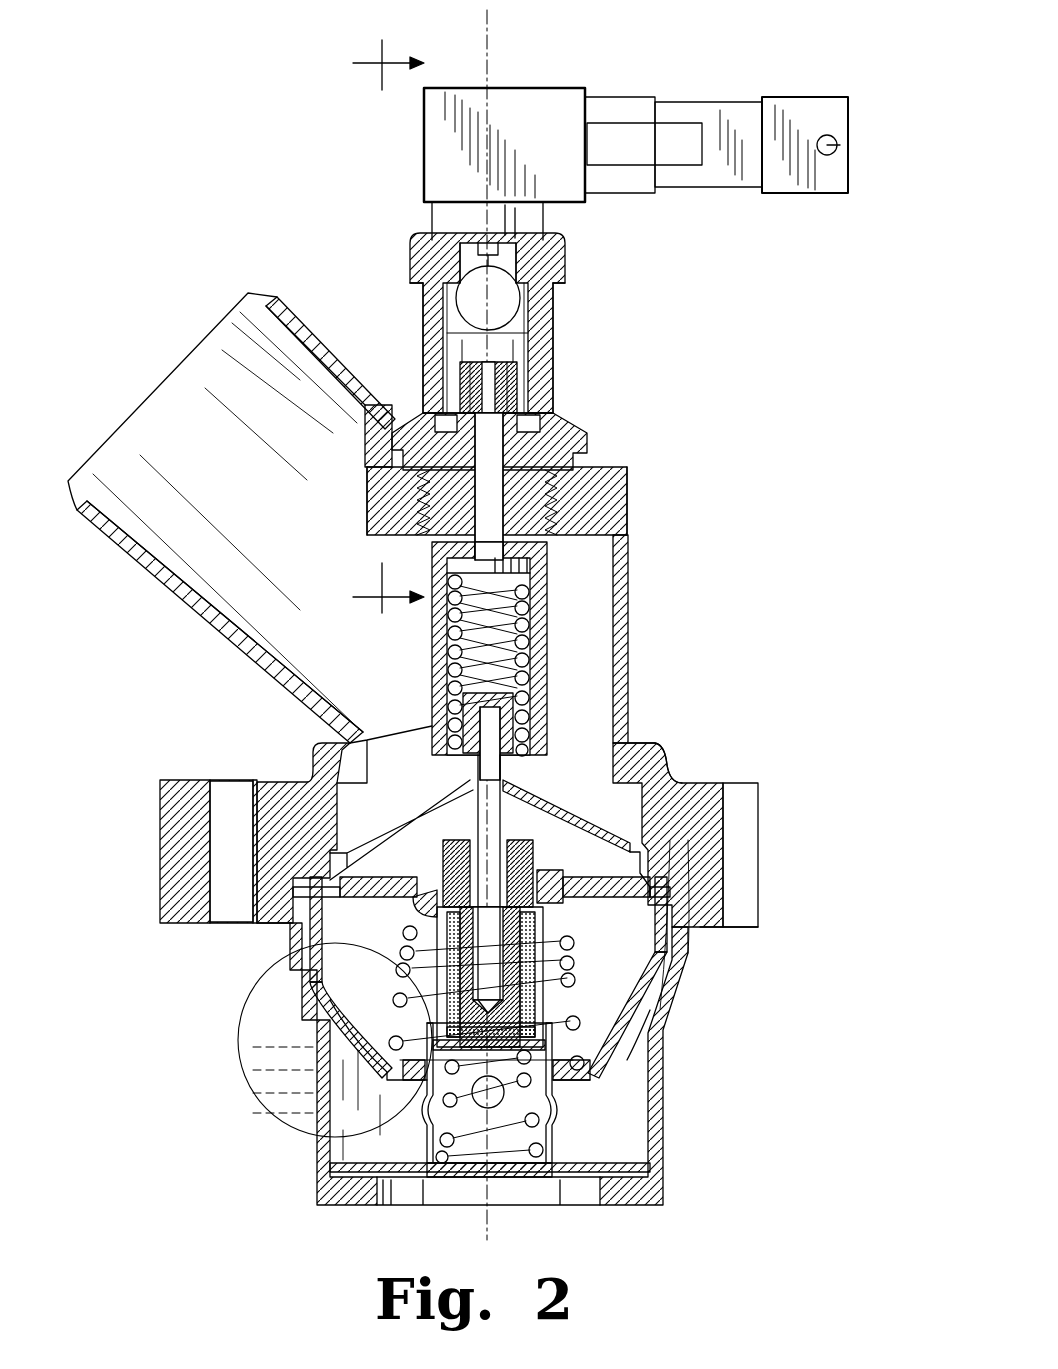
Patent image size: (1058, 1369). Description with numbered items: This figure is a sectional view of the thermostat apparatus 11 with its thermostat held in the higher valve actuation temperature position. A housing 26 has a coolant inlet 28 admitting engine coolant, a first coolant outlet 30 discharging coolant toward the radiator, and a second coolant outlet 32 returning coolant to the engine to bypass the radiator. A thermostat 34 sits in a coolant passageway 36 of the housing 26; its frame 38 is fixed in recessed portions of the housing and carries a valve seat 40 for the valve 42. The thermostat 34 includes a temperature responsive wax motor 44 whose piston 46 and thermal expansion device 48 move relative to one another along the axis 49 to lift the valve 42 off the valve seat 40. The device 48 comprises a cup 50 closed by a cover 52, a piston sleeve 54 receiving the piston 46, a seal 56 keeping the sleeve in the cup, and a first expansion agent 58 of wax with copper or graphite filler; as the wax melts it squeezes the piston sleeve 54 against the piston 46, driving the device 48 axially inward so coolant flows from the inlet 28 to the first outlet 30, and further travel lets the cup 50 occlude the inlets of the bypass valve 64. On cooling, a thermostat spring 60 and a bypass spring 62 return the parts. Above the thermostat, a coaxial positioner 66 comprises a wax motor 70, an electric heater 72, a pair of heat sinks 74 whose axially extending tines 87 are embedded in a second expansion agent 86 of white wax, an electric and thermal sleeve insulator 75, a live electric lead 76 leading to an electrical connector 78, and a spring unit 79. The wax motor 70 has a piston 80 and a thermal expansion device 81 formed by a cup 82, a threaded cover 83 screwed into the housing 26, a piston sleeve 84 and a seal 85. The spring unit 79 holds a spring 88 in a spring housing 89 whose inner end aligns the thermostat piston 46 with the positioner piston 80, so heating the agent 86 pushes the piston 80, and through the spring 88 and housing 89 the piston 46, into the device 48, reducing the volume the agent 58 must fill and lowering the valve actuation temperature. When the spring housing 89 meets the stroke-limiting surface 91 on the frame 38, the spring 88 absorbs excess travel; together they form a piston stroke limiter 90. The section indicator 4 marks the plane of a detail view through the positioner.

The section line 4- 4 is at (388, 332).
The thermostat apparatus 11 is at (168, 91).
The housing 26 is at (636, 537).
The coolant inlet 28 is at (287, 1118).
The first coolant outlet 30 is at (140, 537).
The second coolant outlet 32 is at (592, 1206).
The thermostat 34 is at (625, 799).
The coolant passageway 36 is at (618, 718).
The frame 38 is at (372, 835).
The valve seat 40 is at (365, 878).
The valve 42 is at (368, 897).
The temperature responsive wax motor 44 is at (434, 989).
The piston 46 is at (500, 806).
The thermal expansion device 48 is at (552, 1000).
The axis 49 is at (489, 30).
The cup 50 is at (345, 1010).
The cover 52 is at (455, 843).
The piston sleeve 54 is at (537, 872).
The seal 56 is at (443, 862).
The first expansion agent 58 is at (427, 945).
The thermostat spring 60 is at (572, 947).
The bypass spring 62 is at (552, 1130).
The bypass valve 64 is at (562, 1154).
The positioner 66 is at (592, 626).
The wax motor 70 is at (560, 353).
The electric heater 72 is at (540, 300).
The heat sinks 74 is at (512, 340).
The electric and thermal sleeve insulator 75 is at (423, 298).
The live electric lead 76 is at (480, 247).
The electrical connector 78 is at (562, 88).
The spring unit 79 is at (406, 640).
The piston 80 is at (492, 520).
The thermal expansion device 81 is at (565, 380).
The cup 82 is at (420, 353).
The threaded cover 83 is at (430, 537).
The piston sleeve 84 is at (553, 433).
The seal 85 is at (548, 492).
The second expansion agent 86 is at (423, 412).
The tines 87 is at (468, 345).
The spring 88 is at (440, 657).
The spring housing 89 is at (437, 712).
The piston stroke limiter 90 is at (464, 773).
The stroke-limiting surface 91 is at (505, 762).